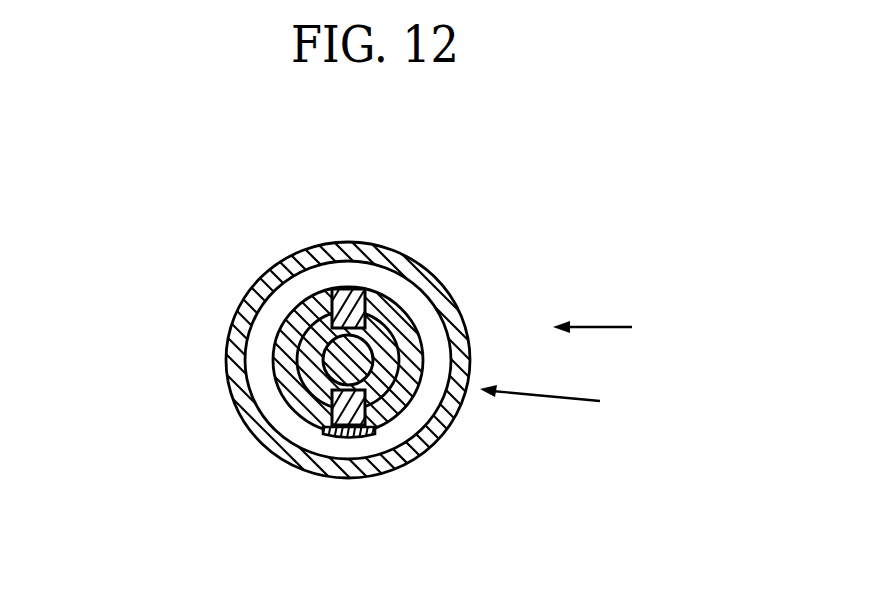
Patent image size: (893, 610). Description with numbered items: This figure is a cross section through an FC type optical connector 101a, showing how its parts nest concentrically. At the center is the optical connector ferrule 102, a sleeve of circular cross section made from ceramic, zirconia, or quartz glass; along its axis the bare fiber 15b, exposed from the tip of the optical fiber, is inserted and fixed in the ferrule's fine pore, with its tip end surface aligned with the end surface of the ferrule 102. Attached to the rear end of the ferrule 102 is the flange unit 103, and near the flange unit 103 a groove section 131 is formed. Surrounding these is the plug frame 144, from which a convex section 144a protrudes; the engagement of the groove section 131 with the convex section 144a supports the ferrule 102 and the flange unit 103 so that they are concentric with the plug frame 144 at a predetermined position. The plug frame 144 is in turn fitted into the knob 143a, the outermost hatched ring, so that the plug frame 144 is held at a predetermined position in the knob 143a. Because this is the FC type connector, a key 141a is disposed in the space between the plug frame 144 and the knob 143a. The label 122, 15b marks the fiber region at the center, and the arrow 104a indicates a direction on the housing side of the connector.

The FC type optical connector 101a is at (227, 191).
The optical connector ferrule 102 is at (370, 405).
The flange unit 103 is at (382, 357).
The outer sheath 104a is at (585, 396).
The electric wire 122 is at (315, 357).
The bare fiber 15b is at (315, 357).
The groove section 131 is at (352, 290).
The key 141a is at (335, 438).
The knob 143a is at (265, 287).
The plug frame 144 is at (403, 318).
The convex section 144a is at (351, 340).